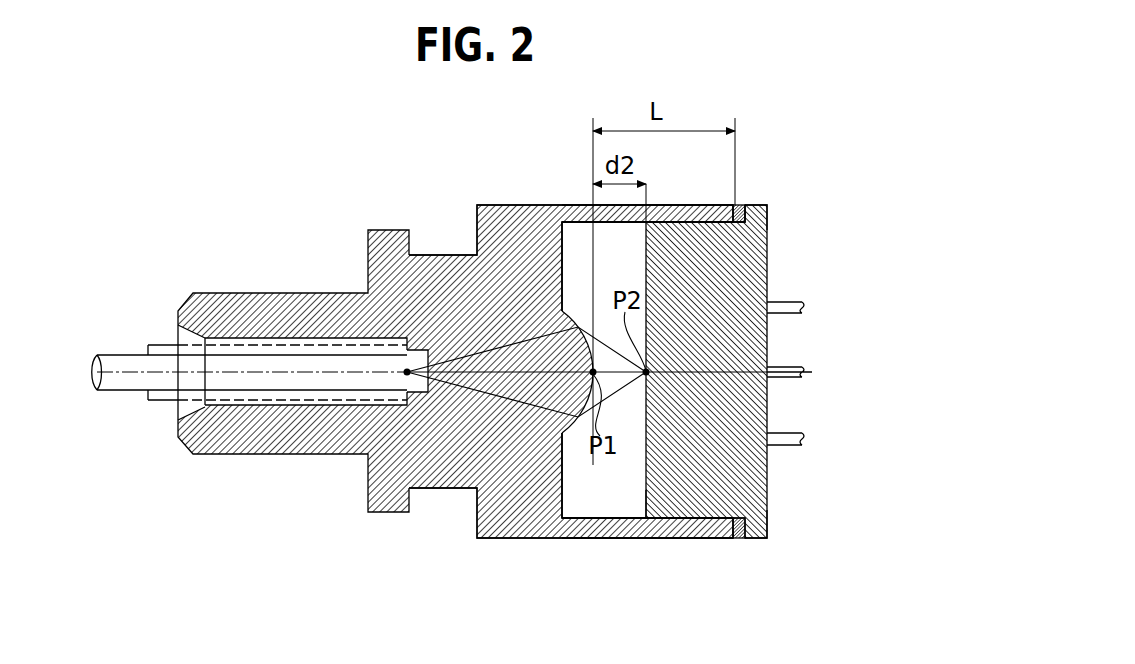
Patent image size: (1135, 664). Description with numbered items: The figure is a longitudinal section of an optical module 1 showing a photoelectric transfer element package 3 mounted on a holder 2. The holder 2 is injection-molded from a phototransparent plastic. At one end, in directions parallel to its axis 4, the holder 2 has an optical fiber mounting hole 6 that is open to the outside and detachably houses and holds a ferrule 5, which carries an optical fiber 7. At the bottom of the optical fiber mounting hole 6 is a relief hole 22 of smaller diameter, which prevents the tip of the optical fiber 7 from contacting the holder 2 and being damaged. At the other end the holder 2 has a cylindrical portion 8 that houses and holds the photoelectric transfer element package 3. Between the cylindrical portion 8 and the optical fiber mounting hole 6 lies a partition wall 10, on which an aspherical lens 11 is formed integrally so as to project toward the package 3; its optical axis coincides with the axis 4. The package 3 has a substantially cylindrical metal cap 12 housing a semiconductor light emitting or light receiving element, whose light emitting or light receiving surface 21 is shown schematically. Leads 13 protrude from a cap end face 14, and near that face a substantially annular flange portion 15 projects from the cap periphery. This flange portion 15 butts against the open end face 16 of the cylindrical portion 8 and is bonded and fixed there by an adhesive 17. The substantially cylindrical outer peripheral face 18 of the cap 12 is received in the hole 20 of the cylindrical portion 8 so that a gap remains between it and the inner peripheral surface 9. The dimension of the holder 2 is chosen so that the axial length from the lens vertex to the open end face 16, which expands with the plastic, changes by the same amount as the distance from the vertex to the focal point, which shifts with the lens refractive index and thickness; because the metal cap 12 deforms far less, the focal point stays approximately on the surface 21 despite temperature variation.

The optical module 1 is at (481, 190).
The holder 2 is at (381, 228).
The photoelectric transfer element package 3 is at (771, 251).
The axis 4 is at (805, 377).
The ferrule 5 is at (160, 343).
The optical fiber mounting hole 6 is at (222, 406).
The optical fiber 7 is at (102, 382).
The cylindrical portion 8 is at (710, 205).
The inner peripheral surface 9 is at (583, 240).
The partition wall 10 is at (511, 513).
The aspherical lens 11 is at (574, 425).
The cap 12 is at (697, 533).
The leads 13 is at (786, 302).
The cap end face 14 is at (768, 521).
The flange portion 15 is at (767, 207).
The open end face 16 is at (692, 214).
The adhesive 17 is at (745, 222).
The outer peripheral face 18 is at (737, 535).
The hole 20 is at (588, 520).
The surface 21 is at (646, 503).
The relief hole 22 is at (414, 390).